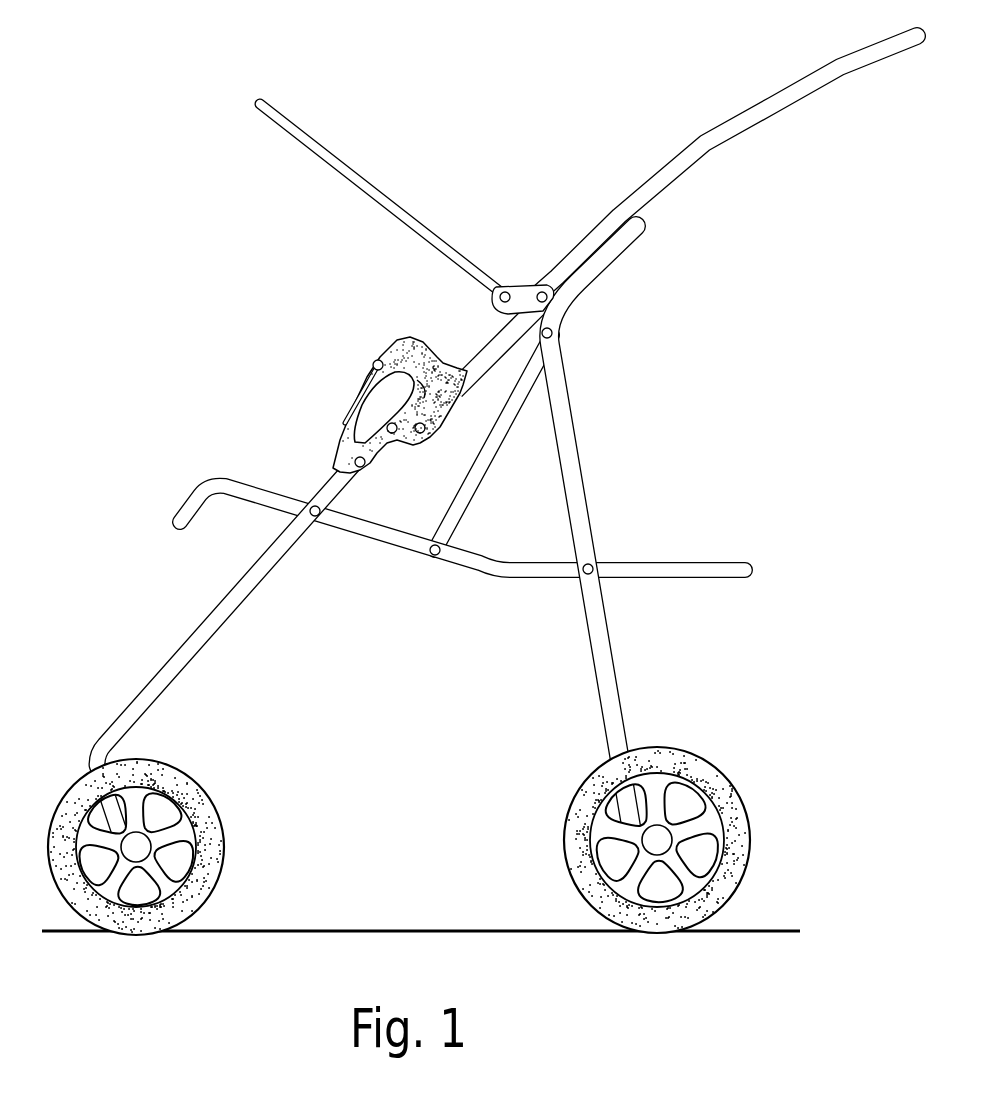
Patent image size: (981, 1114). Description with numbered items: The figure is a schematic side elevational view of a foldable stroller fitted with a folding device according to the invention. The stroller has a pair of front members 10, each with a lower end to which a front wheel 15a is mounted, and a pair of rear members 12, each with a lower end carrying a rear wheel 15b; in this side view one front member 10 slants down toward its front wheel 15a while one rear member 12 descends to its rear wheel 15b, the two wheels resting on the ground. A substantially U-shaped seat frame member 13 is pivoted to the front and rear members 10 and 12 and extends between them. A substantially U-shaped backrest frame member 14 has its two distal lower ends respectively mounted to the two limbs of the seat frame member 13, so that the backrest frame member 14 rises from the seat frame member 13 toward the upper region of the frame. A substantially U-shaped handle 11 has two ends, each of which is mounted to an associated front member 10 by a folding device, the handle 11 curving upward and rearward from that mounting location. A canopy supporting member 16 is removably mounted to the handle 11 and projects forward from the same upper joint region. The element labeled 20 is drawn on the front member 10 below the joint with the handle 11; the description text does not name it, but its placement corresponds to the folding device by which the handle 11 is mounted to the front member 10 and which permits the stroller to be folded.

The front member 10 is at (262, 575).
The handle 11 is at (665, 188).
The rear member 12 is at (575, 467).
The seat frame member 13 is at (480, 567).
The backrest frame member 14 is at (502, 440).
The front wheel 15a is at (203, 807).
The rear wheel 15b is at (730, 792).
The canopy supporting member 16 is at (383, 198).
The latch mount 20 is at (343, 428).